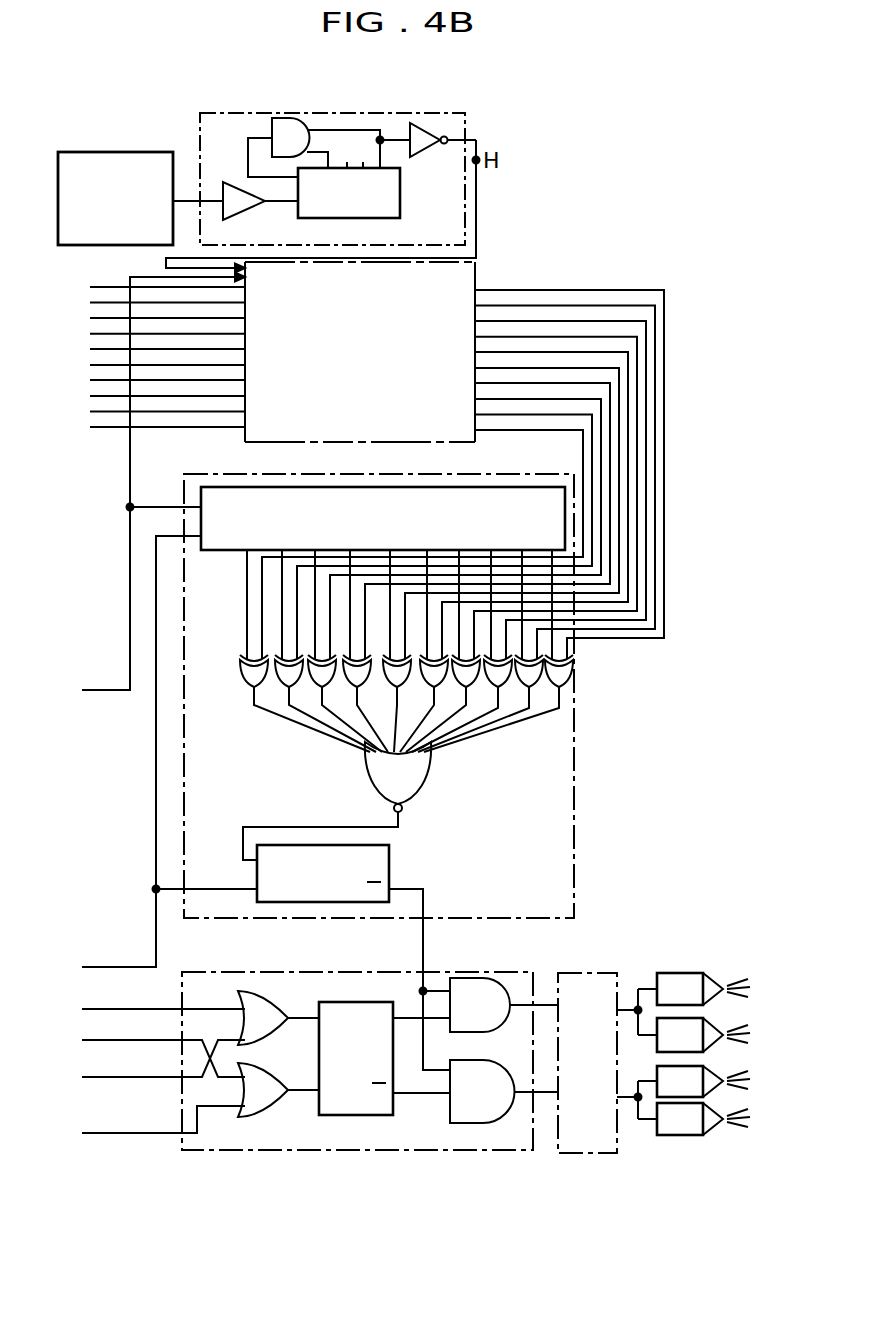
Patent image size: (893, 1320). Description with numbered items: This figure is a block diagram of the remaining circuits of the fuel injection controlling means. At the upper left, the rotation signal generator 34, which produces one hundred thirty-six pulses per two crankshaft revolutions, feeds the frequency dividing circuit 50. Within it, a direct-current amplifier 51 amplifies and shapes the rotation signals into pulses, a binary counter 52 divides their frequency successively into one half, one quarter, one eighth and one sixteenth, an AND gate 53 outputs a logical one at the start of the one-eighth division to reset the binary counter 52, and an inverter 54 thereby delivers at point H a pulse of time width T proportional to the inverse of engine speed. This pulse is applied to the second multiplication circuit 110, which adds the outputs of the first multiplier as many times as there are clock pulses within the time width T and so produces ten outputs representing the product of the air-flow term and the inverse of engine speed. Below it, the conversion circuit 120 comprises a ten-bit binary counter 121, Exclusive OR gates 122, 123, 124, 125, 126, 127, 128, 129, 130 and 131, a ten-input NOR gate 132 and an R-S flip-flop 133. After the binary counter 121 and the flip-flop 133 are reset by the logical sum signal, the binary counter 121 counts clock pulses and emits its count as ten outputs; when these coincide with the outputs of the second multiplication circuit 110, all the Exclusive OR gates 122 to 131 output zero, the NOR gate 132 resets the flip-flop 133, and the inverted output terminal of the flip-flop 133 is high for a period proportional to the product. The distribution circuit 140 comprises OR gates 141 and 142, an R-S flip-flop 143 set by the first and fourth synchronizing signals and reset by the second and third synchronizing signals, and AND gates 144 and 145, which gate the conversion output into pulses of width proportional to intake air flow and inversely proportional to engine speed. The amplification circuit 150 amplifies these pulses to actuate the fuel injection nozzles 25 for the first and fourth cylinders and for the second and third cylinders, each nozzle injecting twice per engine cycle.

The rotation signal generator 34 is at (143, 152).
The frequency dividing circuit 50 is at (465, 116).
The direct-current amplifier 51 is at (238, 182).
The binary counter 52 is at (400, 218).
The AND gate 53 is at (295, 113).
The inverter 54 is at (438, 152).
The second multiplication circuit 110 is at (478, 281).
The conversion circuit 120 is at (574, 773).
The 10-bit binary counter 121 is at (210, 552).
The Exclusive OR gate 122 is at (239, 669).
The Exclusive OR gate 123 is at (316, 703).
The Exclusive OR gate 124 is at (336, 703).
The Exclusive OR gate 125 is at (356, 703).
The Exclusive OR gate 126 is at (385, 703).
The Exclusive OR gate 127 is at (424, 703).
The Exclusive OR gate 128 is at (443, 703).
The Exclusive OR gate 129 is at (462, 703).
The Exclusive OR gate 130 is at (522, 712).
The Exclusive OR gate 131 is at (552, 712).
The 10-input NOR gate 132 is at (428, 786).
The R-S flip-flop 133 is at (257, 880).
The distribution circuit 140 is at (535, 970).
The OR gate 141 is at (270, 1000).
The OR gate 142 is at (270, 1069).
The R-S flip-flop 143 is at (340, 1001).
The AND gate 144 is at (471, 978).
The AND gate 145 is at (507, 1053).
The amplification circuit 150 is at (569, 1177).
The fuel injection valves 25 is at (684, 973).